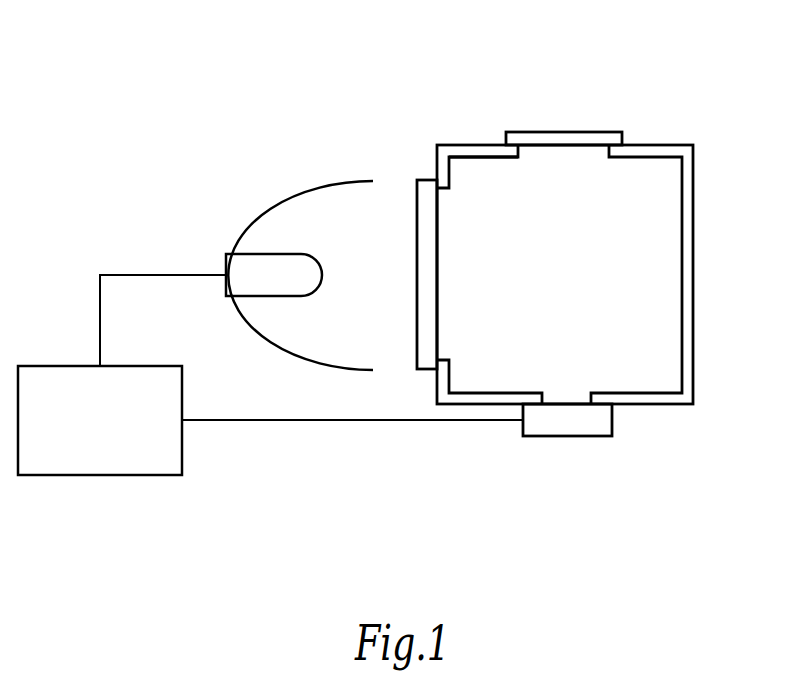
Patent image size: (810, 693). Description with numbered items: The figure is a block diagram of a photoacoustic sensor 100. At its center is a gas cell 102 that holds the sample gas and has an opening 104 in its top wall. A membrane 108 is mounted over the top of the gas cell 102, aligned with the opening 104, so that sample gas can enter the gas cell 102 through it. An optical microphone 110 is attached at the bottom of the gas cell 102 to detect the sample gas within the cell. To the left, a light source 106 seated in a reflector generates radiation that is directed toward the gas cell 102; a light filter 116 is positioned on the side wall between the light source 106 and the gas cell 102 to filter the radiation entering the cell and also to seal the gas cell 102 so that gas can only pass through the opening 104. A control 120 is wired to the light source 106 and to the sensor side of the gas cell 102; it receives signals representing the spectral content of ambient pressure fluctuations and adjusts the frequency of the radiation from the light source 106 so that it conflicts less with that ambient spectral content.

The photoacoustic sensor 100 is at (692, 62).
The gas cell 102 is at (694, 273).
The opening 104 is at (518, 155).
The light source 106 is at (283, 254).
The membrane 108 is at (566, 132).
The optical microphone 110 is at (569, 437).
The light filter 116 is at (417, 273).
The control 120 is at (162, 366).